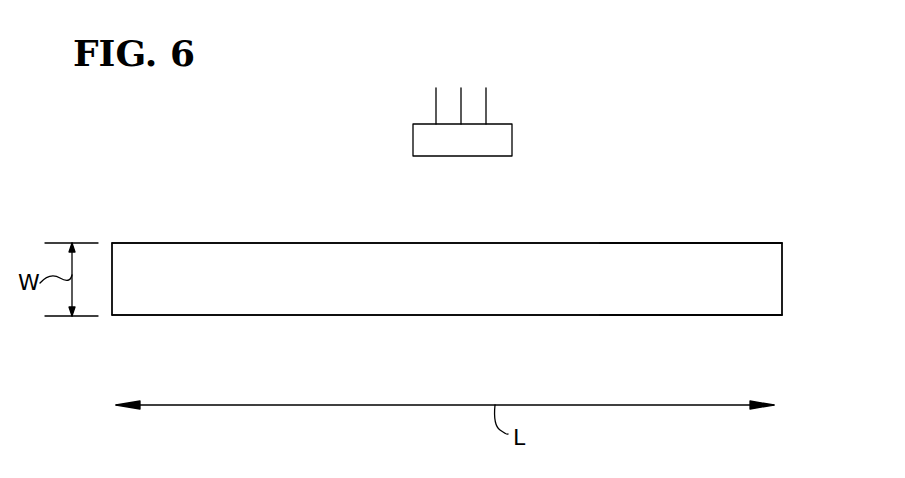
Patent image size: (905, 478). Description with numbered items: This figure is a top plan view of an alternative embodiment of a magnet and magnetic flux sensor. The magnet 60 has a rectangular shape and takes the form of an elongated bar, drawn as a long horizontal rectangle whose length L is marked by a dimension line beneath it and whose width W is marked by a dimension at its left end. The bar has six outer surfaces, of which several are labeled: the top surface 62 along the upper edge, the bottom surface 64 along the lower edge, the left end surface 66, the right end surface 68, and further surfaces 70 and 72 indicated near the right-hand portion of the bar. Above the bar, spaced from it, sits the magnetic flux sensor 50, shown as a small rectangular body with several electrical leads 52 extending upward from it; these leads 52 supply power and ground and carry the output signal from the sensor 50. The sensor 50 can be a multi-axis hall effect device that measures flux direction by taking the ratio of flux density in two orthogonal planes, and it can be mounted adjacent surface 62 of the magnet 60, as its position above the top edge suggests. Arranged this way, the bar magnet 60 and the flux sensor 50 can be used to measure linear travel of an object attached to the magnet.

The magnetic flux sensor 50 is at (512, 145).
The electrical leads 52 is at (436, 100).
The magnet 60 is at (431, 321).
The outer surface 62 is at (197, 243).
The outer surface 64 is at (233, 316).
The outer surface 66 is at (112, 284).
The outer surface 68 is at (782, 277).
The outer surface 70 is at (655, 290).
The outer surface 72 is at (713, 243).